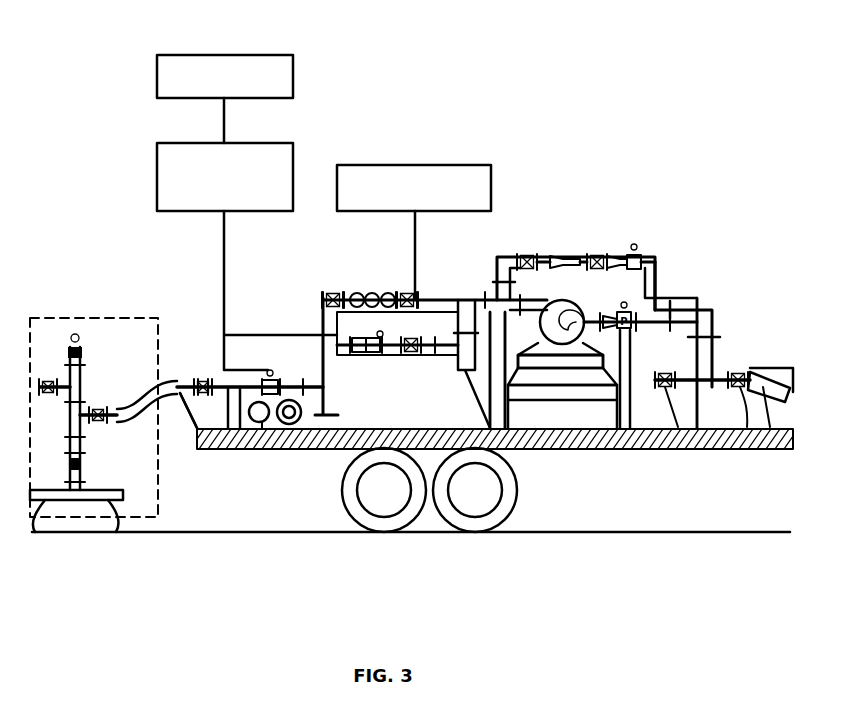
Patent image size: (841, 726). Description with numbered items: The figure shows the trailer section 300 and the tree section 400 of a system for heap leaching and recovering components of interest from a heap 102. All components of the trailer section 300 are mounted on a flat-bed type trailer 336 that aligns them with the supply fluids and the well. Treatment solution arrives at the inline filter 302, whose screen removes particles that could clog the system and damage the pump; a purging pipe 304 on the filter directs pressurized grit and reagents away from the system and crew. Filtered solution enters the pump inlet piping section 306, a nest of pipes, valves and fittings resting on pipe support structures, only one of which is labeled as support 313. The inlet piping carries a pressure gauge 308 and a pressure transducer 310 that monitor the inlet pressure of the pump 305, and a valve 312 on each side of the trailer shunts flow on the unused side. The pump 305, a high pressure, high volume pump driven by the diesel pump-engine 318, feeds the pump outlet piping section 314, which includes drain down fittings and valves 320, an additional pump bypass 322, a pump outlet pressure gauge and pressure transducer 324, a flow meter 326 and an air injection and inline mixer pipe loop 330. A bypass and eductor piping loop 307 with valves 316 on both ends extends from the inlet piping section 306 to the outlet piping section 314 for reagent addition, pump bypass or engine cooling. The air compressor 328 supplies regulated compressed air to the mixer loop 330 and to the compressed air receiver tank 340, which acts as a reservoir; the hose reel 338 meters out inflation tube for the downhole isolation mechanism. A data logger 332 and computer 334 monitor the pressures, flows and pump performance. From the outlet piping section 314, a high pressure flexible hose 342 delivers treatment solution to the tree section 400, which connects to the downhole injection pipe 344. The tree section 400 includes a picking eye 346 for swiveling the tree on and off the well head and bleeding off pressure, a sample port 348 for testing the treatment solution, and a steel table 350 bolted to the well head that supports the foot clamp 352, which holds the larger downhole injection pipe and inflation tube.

The trailer section 300 is at (396, 47).
The heap 102 is at (430, 533).
The drain down fittings and valves 320 is at (490, 450).
The computer 334 is at (157, 77).
The data logger 332 is at (157, 180).
The air compressor 328 is at (407, 165).
The sample port 348 is at (44, 385).
The flow meter 326 is at (270, 373).
The hose reel 338 is at (283, 452).
The compressed air receiver tank 340 is at (307, 452).
The high pressure flexible hose 342 is at (200, 452).
The pump outlet piping section 314 is at (482, 260).
The pump outlet pressure gauge and pressure transducer 324 is at (365, 332).
The air injection and inline mixer pipe loop 330 is at (373, 299).
The additional pump bypass 322 is at (413, 339).
The pump inlet piping section 306 is at (672, 262).
The valves 316 is at (596, 257).
The bypass and eductor piping loop 307 is at (565, 249).
The pressure transducer 310 is at (633, 244).
The pressure gauge 308 is at (633, 310).
The pump 305 is at (549, 305).
The diesel pump-engine 318 is at (587, 417).
The trailer 336 is at (548, 423).
The support 313 is at (626, 403).
The valve 312 is at (696, 450).
The purging pipe 304 is at (757, 450).
The inline filter 302 is at (758, 368).
The tree section 400 is at (160, 483).
The downhole injection pipe 344 is at (82, 380).
The picking eye 346 is at (81, 340).
The table 350 is at (100, 500).
The foot clamp 352 is at (42, 500).